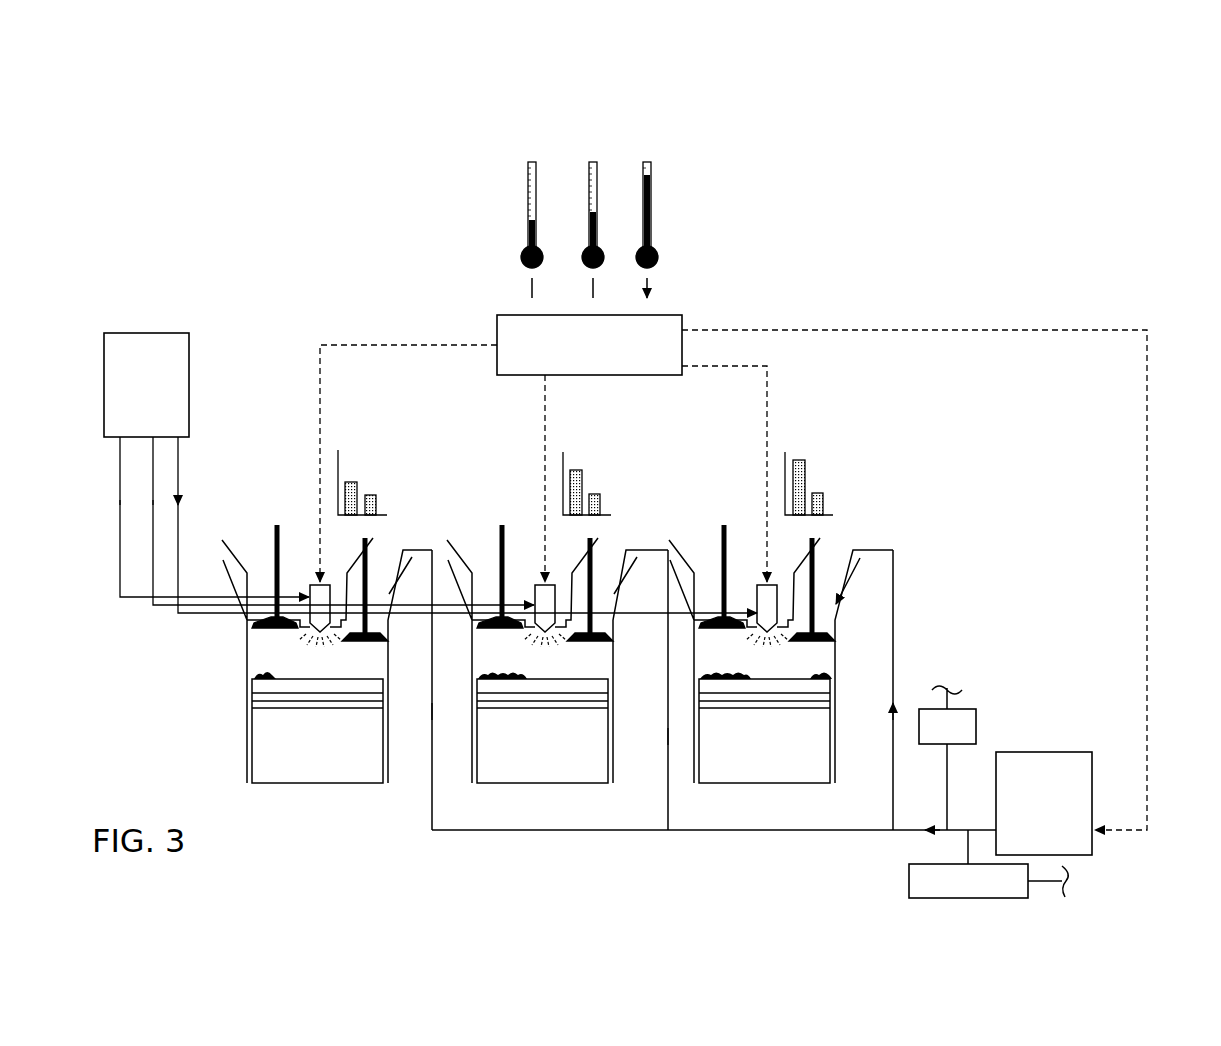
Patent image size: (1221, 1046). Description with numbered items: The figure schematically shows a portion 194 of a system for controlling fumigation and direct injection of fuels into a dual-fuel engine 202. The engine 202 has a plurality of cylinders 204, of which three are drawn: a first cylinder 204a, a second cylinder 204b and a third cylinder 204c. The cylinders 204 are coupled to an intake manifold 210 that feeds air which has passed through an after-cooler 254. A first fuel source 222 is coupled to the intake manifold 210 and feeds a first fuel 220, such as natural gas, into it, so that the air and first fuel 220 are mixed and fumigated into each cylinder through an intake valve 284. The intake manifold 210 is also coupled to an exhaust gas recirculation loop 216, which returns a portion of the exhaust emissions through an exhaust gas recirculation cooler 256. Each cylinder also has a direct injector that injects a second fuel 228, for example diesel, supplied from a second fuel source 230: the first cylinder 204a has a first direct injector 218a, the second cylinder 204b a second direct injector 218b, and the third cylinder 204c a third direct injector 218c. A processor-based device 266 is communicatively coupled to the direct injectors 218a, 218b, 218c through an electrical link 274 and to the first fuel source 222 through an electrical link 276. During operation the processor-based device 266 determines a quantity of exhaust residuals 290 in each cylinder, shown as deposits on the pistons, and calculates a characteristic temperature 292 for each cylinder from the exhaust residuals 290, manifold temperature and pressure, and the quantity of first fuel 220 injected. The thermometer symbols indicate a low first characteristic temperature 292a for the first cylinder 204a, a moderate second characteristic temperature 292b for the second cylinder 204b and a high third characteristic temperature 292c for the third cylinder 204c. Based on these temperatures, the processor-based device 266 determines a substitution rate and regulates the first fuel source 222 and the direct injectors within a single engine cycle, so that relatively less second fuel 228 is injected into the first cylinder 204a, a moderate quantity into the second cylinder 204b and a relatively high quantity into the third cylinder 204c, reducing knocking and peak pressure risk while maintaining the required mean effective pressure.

The portion of system 194 is at (1078, 177).
The dual-fuel engine 202 is at (954, 436).
The plurality of cylinders 204 is at (340, 843).
The first cylinder 204a is at (390, 755).
The second cylinder 204b is at (615, 755).
The third cylinder 204c is at (838, 755).
The intake manifold 210 is at (712, 830).
The exhaust gas recirculation loop 216 is at (960, 697).
The first direct injector 218a is at (316, 580).
The second direct injector 218b is at (539, 578).
The third direct injector 218c is at (759, 578).
The first fuel 220 is at (378, 500).
The first fuel source 222 is at (1045, 752).
The second fuel 228 is at (178, 508).
The second fuel source 230 is at (150, 333).
The after-cooler 254 is at (908, 880).
The exhaust gas recirculation cooler 256 is at (978, 722).
The processor-based device 266 is at (683, 318).
The electrical link 274 is at (376, 344).
The electrical link 276 is at (1148, 433).
The intake valve 284 is at (373, 642).
The exhaust residuals 290 is at (258, 679).
The characteristic temperature 292 is at (643, 170).
The first characteristic temperature 292a is at (558, 217).
The second characteristic temperature 292b is at (618, 217).
The third characteristic temperature 292c is at (678, 217).